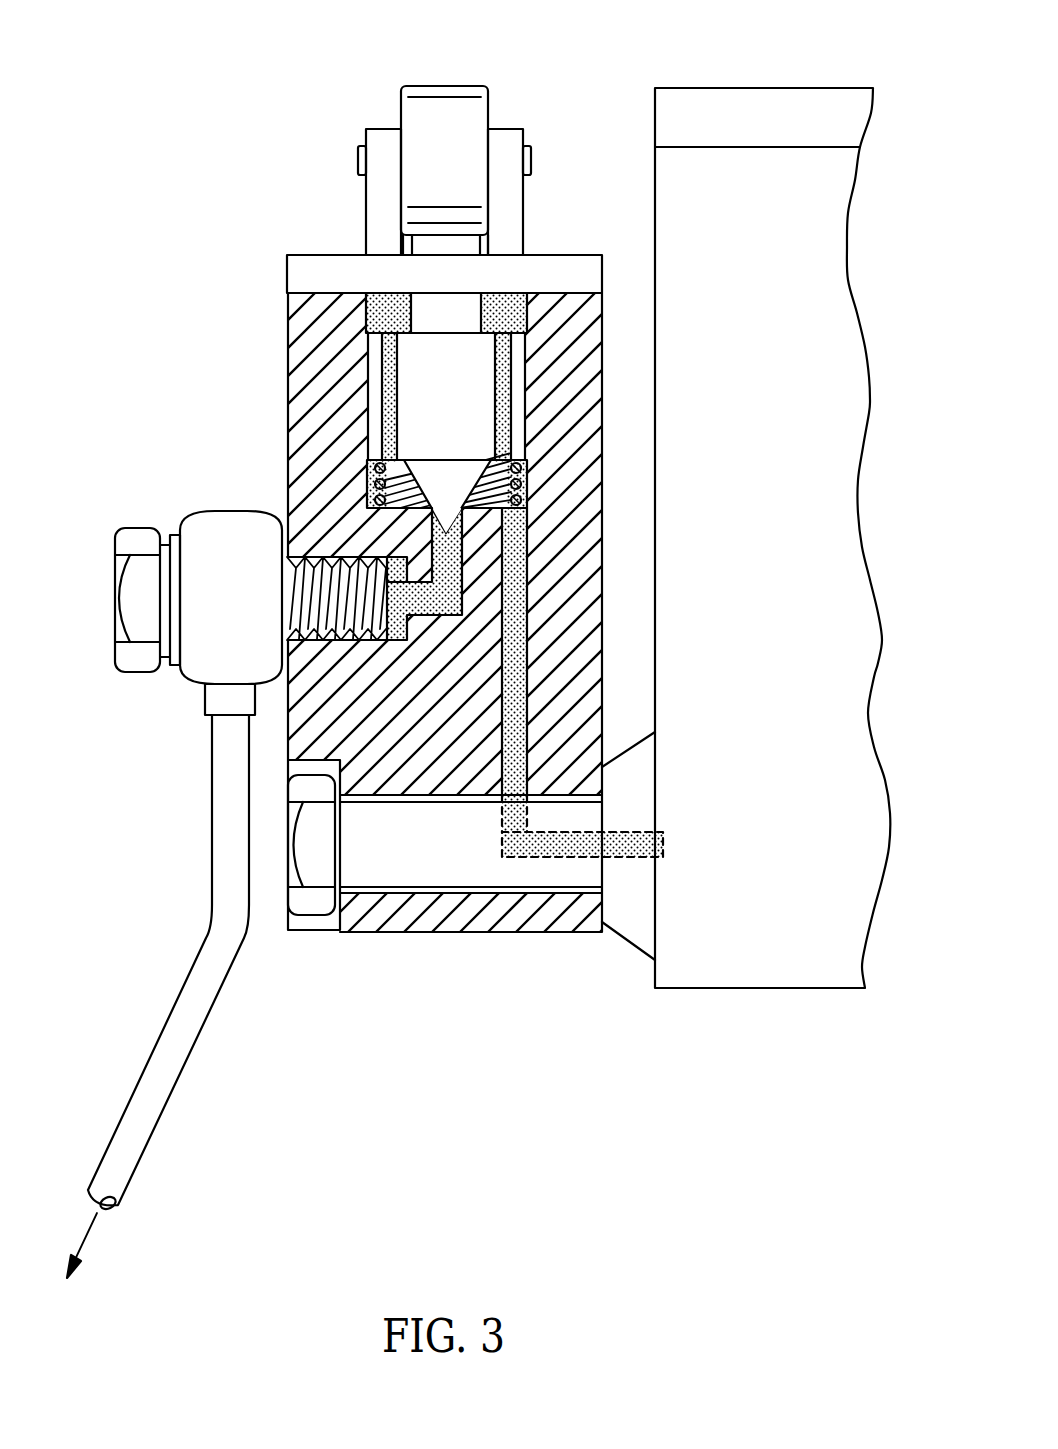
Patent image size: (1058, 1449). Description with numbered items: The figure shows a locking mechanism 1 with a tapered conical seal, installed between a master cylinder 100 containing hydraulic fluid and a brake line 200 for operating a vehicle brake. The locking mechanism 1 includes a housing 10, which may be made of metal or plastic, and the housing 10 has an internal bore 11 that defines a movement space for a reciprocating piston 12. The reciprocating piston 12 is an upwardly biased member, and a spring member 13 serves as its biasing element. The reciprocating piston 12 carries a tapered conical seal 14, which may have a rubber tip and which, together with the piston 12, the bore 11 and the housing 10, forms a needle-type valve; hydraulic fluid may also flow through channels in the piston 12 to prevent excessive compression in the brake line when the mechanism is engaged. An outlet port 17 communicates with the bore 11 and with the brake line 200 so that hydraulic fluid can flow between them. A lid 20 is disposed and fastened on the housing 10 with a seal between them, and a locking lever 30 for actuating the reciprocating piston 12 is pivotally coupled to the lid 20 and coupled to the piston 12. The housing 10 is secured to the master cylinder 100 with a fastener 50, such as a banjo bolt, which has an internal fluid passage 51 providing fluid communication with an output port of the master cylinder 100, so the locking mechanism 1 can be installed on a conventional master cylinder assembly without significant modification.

The locking mechanism 1 is at (171, 217).
The housing 10 is at (287, 358).
The internal bore 11 is at (366, 343).
The reciprocating piston 12 is at (403, 378).
The spring member 13 is at (367, 503).
The tapered conical seal 14 is at (525, 462).
The outlet port 17 is at (462, 537).
The lid 20 is at (308, 255).
The locking lever 30 is at (420, 86).
The fastener 50 is at (292, 875).
The internal fluid passage 51 is at (502, 832).
The master cylinder 100 is at (709, 185).
The brake line 200 is at (152, 1047).